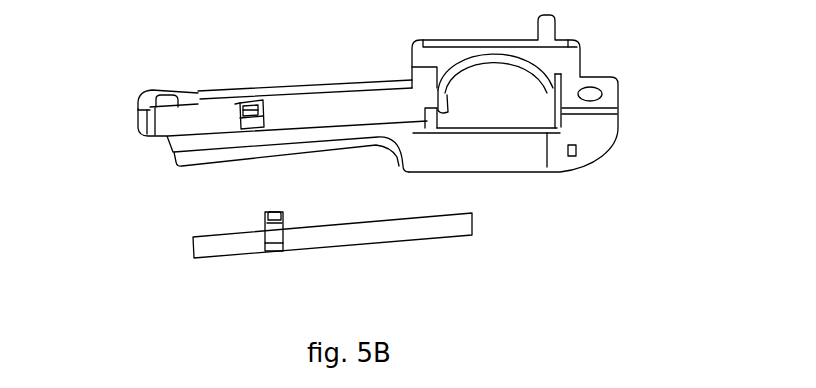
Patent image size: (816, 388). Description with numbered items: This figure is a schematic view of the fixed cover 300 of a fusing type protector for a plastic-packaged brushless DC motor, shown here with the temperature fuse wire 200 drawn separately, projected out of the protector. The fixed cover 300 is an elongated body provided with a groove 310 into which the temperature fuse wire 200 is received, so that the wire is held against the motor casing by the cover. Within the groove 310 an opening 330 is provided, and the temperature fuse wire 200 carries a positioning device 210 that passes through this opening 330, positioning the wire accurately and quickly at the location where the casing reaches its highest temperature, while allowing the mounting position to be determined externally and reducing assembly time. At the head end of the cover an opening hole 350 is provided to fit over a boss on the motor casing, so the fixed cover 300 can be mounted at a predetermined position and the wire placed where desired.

The temperature fuse wire 200 is at (203, 247).
The positioning device 210 is at (265, 215).
The fixed cover 300 is at (183, 125).
The groove 310 is at (150, 132).
The opening 330 is at (232, 96).
The opening hole 350 is at (483, 97).